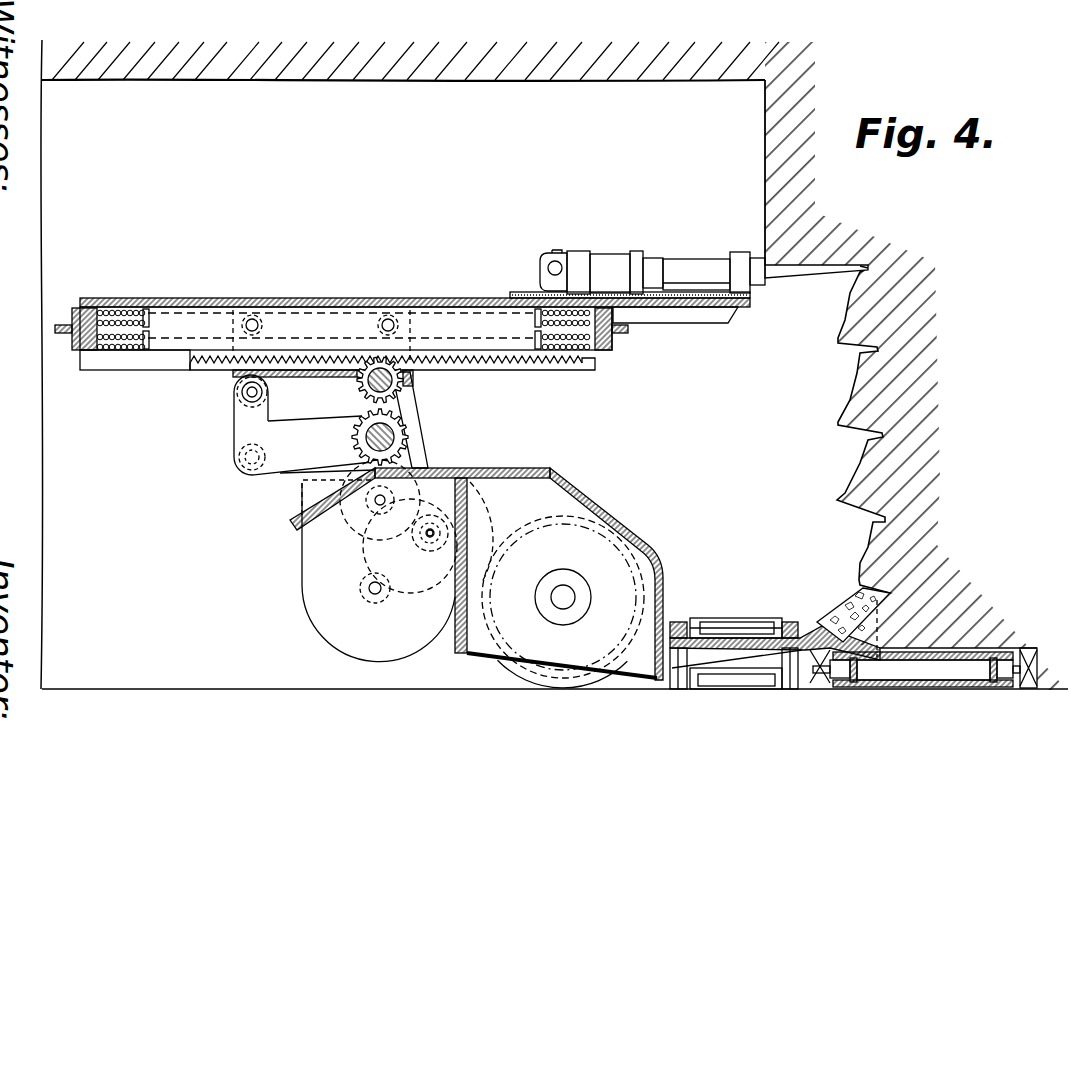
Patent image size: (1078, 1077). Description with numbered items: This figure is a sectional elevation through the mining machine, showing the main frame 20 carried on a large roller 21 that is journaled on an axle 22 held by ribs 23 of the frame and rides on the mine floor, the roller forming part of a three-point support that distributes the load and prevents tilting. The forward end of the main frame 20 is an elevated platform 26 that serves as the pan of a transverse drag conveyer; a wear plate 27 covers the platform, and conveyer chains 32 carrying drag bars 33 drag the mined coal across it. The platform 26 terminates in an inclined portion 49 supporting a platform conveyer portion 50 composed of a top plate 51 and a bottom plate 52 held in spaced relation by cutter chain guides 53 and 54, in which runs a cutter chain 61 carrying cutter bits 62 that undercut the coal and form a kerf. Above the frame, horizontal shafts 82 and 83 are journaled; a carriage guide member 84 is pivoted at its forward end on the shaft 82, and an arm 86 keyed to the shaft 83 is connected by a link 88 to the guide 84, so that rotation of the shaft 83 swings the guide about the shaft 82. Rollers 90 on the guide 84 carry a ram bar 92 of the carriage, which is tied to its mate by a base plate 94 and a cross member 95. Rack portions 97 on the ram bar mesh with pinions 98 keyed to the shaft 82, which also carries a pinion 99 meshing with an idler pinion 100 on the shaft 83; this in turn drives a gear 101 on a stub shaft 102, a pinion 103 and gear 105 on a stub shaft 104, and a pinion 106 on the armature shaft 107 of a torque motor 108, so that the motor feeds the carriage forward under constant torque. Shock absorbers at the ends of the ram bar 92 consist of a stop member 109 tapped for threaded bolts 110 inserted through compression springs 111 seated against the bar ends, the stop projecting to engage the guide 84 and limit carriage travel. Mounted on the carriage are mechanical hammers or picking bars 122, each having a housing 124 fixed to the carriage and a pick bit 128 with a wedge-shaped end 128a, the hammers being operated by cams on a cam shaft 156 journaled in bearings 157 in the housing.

The main frame 20 is at (500, 470).
The large roller 21 is at (585, 690).
The axle 22 is at (566, 597).
The ribs 23 is at (478, 656).
The elevated platform 26 is at (723, 640).
The wear plate 27 is at (737, 635).
The conveyer chains 32 is at (680, 620).
The drag bars 33 is at (748, 622).
The inclined portion 49 is at (831, 640).
The platform conveyer portion 50 is at (926, 667).
The top plate 51 is at (976, 654).
The bottom plate 52 is at (955, 688).
The cutter chain guide 53 is at (860, 683).
The cutter chain guide 54 is at (962, 648).
The cutter chain 61 is at (840, 679).
The cutter bits 62 is at (1029, 655).
The horizontal shaft 82 is at (393, 370).
The horizontal shaft 83 is at (406, 445).
The carriage guide member 84 is at (240, 386).
The arm 86 is at (278, 463).
The link 88 is at (240, 423).
The rollers 90 is at (255, 316).
The ram bar 92 is at (190, 298).
The base plate 94 is at (520, 296).
The cross member 95 is at (740, 256).
The rack portions 97 is at (508, 362).
The pinions 98 is at (405, 385).
The pinion 99 is at (363, 397).
The idler pinion 100 is at (409, 432).
The gear 101 is at (370, 463).
The stub shaft 102 is at (380, 503).
The pinion 103 is at (428, 534).
The stub shaft 104 is at (431, 543).
The gear 105 is at (483, 508).
The pinion 106 is at (366, 593).
The armature shaft 107 is at (375, 597).
The torque motor 108 is at (326, 623).
The stop member 109 is at (70, 330).
The threaded bolts 110 is at (150, 337).
The compression springs 111 is at (118, 311).
The mechanical hammers or picking bars 122 is at (691, 263).
The housing 124 is at (606, 258).
The pick bit 128 is at (803, 275).
The wedge-shaped end 128a is at (868, 268).
The cam shaft 156 is at (548, 266).
The bearings 157 is at (553, 252).